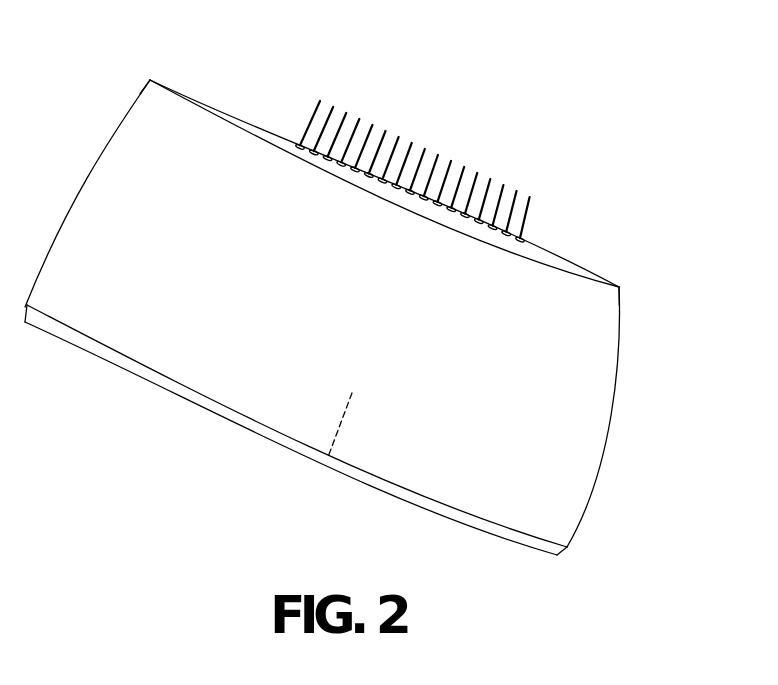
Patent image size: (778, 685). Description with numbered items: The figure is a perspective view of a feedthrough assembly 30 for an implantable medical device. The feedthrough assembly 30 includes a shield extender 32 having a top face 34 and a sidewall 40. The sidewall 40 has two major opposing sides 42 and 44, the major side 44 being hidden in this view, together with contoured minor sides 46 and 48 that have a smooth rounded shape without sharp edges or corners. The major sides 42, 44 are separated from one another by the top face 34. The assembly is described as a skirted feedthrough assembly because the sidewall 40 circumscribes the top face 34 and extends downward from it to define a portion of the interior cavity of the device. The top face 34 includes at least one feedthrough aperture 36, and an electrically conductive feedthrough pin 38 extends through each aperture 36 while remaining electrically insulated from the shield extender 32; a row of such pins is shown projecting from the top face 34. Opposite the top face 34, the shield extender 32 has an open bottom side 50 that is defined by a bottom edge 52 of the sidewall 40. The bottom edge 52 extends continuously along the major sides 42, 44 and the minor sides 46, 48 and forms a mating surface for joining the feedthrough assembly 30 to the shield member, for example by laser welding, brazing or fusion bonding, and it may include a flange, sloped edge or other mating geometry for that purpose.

The feedthrough assembly 30 is at (390, 82).
The shield extender 32 is at (150, 78).
The top face 34 is at (580, 262).
The feedthrough aperture 36 is at (537, 245).
The feedthrough pin 38 is at (517, 207).
The sidewall 40 is at (233, 110).
The major side 42 is at (168, 330).
The major side 44 is at (327, 465).
The contoured minor side 46 is at (572, 440).
The contoured minor side 48 is at (63, 215).
The open bottom side 50 is at (256, 471).
The bottom edge 52 is at (505, 548).